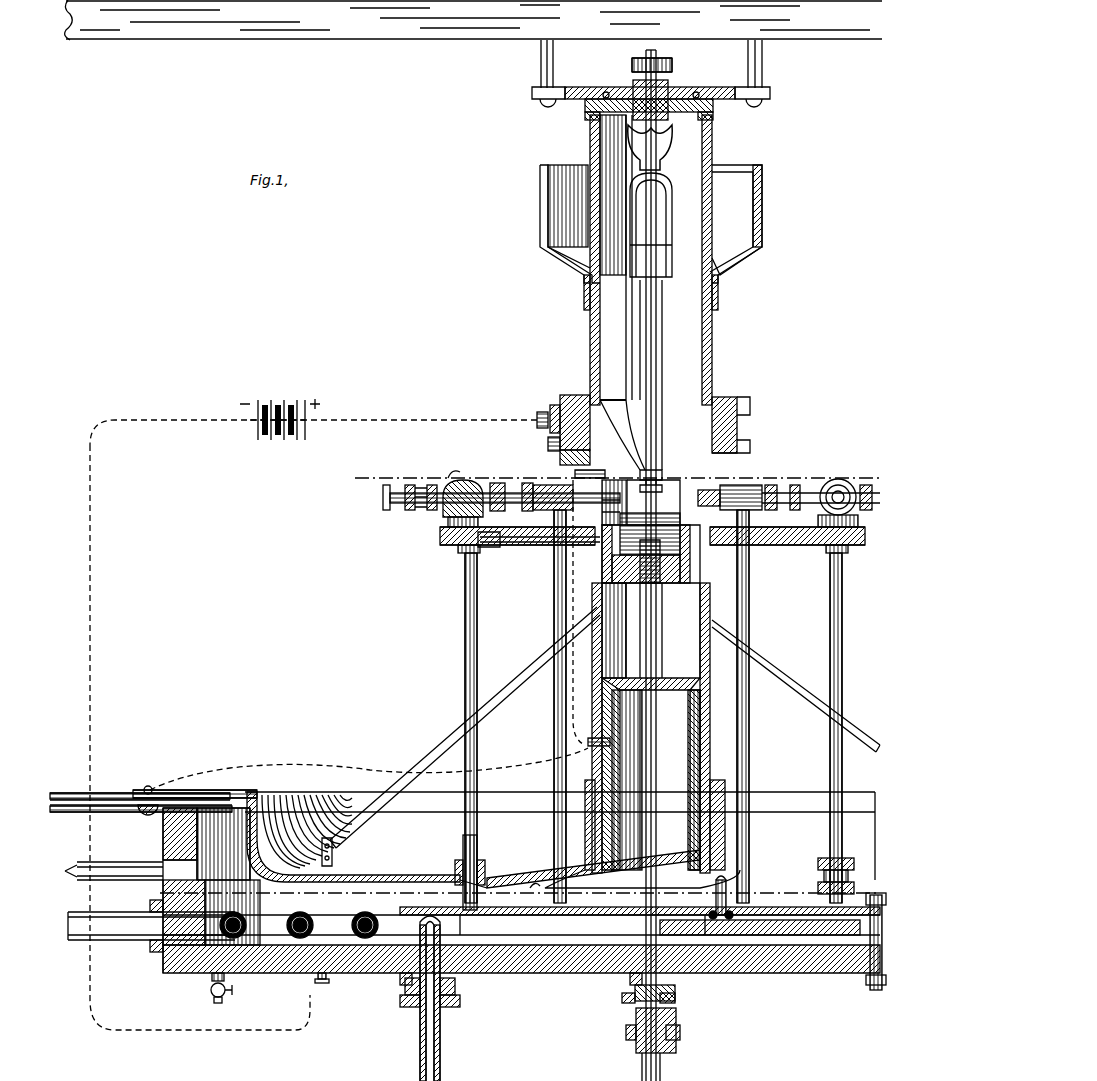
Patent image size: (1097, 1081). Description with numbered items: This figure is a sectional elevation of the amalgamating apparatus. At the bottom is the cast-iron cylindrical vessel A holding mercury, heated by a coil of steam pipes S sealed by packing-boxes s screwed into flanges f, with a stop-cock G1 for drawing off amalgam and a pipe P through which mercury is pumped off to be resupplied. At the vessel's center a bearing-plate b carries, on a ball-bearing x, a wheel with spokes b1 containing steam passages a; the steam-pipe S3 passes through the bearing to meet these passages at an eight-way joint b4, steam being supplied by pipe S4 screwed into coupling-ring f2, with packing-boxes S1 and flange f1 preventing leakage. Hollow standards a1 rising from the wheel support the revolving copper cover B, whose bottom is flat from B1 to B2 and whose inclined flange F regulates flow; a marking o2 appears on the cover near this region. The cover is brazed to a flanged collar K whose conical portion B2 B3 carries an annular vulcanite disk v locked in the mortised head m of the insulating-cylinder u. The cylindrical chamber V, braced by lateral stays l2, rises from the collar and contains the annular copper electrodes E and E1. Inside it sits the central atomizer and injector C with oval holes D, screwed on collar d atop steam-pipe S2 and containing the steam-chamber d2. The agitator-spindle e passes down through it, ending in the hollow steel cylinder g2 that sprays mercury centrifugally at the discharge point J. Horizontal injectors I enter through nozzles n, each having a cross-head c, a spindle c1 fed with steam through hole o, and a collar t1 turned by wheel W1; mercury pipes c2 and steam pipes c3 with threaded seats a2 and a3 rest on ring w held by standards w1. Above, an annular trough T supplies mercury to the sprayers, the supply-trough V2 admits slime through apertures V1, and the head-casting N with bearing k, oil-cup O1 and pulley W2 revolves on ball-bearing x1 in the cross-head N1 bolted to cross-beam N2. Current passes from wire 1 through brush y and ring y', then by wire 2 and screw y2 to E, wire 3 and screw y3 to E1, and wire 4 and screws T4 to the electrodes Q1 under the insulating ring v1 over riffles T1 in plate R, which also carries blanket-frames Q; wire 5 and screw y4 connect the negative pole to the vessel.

The cross-beam N2 is at (473, 20).
The circular cross-head N1 is at (770, 93).
The head-casting N is at (713, 112).
The ball-bearing x1 is at (658, 83).
The grooved pulley-wheel W2 is at (632, 62).
The friction-bearing k is at (668, 88).
The oil-cup O1 is at (672, 158).
The agitator-spindle e is at (656, 300).
The apertures V1 is at (600, 220).
The supply-trough V2 is at (736, 224).
The contact-brush y is at (533, 407).
The copper ring y' is at (549, 418).
The wire 1 is at (313, 422).
The wire 5 is at (200, 737).
The annular trough T is at (731, 425).
The annular copper electrode E is at (639, 435).
The insulated screw y2 is at (578, 468).
The hollow steel cylinder g2 is at (652, 470).
The wire 2 is at (568, 474).
The horizontal injectors I is at (646, 456).
The regulating wheels W1 is at (383, 497).
The collar t1 is at (410, 510).
The injector cross-head c is at (838, 479).
The steam hole o is at (452, 465).
The injector spindle c1 is at (512, 482).
The injector-nozzle n is at (710, 490).
The discharge point J is at (646, 502).
The vertical atomizer and injector C is at (651, 548).
The oval holes D is at (690, 583).
The collar d is at (668, 583).
The cylindrical steam-chamber d2 is at (613, 570).
The ring w is at (440, 536).
The horizontal standards w1 is at (530, 545).
The screw seat a3 is at (468, 553).
The steam pipes c3 is at (477, 620).
The mercury supply pipes c2 is at (554, 612).
The wire 3 is at (75, 784).
The radial blanket-frames Q is at (108, 800).
The flat ring R is at (114, 812).
The chamber V is at (651, 728).
The steam-pipe S2 is at (645, 730).
The insulating-cylinder u is at (710, 742).
The annular copper electrode E1 is at (690, 766).
The insulated screw y3 is at (587, 743).
The wire 4 is at (369, 769).
The lateral stays l2 is at (428, 745).
The copper cover B is at (560, 836).
The flange F is at (353, 837).
The non-conducting ring v1 is at (220, 784).
The amalgamating riffles T1 is at (144, 819).
The screws T4 is at (140, 781).
The annular electrodes Q1 is at (178, 760).
The cylindrical vessel A is at (215, 870).
The cover bottom point B1 is at (287, 890).
The opening o2 is at (240, 848).
The pipe P is at (120, 862).
The steam-heating pipes S is at (450, 1050).
The packing-boxes s is at (468, 1000).
The screw seat a2 is at (480, 845).
The flanged collar K is at (540, 858).
The current compression point B2 is at (498, 887).
The annular vulcanite disk v is at (712, 880).
The mortised head m is at (578, 876).
The collar cone end point B3 is at (604, 873).
The vertical hollow standards a1 is at (520, 894).
The eight-way joint b4 is at (655, 908).
The ball-bearing x is at (700, 912).
The spokes b1 is at (550, 915).
The steam passages a is at (516, 924).
The bearing-plate b is at (760, 928).
The flanges f is at (400, 980).
The flange f1 is at (627, 983).
The steam-pipe S3 is at (675, 992).
The packing-boxes S1 is at (690, 1045).
The coupling-ring f2 is at (670, 1020).
The steam supply pipe S4 is at (660, 1068).
The stop-cock G1 is at (232, 990).
The screw y4 is at (323, 987).